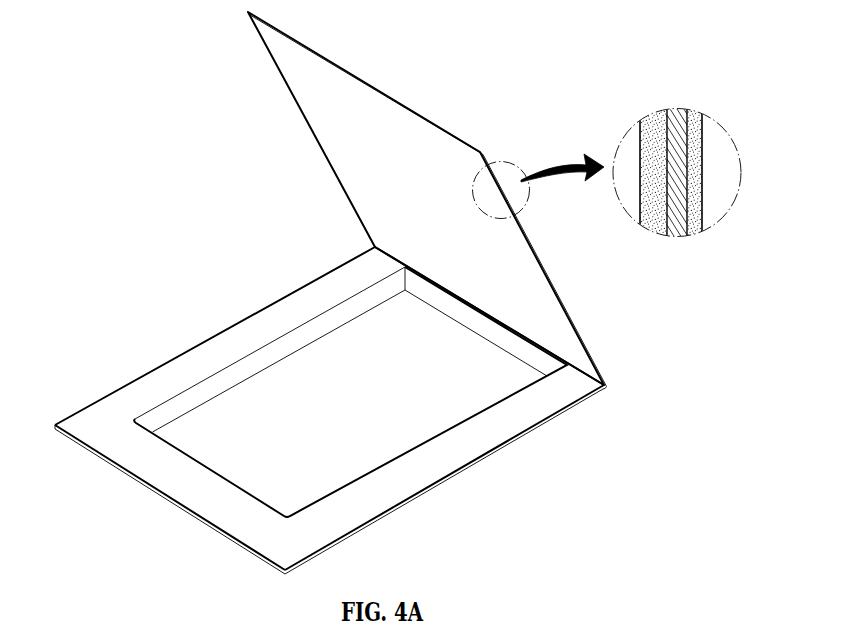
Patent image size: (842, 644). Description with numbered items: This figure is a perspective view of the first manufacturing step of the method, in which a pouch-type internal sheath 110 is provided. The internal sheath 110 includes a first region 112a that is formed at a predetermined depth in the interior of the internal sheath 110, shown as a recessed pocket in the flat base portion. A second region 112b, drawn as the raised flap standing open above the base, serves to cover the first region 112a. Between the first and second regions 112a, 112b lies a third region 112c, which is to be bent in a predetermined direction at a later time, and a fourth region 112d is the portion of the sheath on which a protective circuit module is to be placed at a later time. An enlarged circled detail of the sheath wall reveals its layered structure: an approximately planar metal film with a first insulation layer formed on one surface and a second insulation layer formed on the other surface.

The internal sheath 110 is at (318, 293).
The first region 112a is at (236, 405).
The second region 112b is at (377, 156).
The third region 112c is at (447, 465).
The fourth region 112d is at (169, 482).